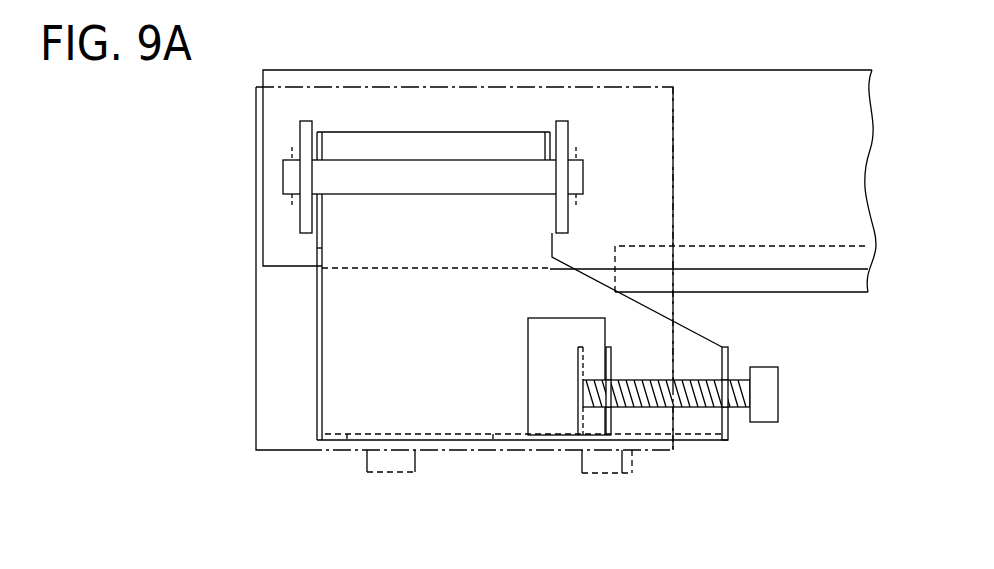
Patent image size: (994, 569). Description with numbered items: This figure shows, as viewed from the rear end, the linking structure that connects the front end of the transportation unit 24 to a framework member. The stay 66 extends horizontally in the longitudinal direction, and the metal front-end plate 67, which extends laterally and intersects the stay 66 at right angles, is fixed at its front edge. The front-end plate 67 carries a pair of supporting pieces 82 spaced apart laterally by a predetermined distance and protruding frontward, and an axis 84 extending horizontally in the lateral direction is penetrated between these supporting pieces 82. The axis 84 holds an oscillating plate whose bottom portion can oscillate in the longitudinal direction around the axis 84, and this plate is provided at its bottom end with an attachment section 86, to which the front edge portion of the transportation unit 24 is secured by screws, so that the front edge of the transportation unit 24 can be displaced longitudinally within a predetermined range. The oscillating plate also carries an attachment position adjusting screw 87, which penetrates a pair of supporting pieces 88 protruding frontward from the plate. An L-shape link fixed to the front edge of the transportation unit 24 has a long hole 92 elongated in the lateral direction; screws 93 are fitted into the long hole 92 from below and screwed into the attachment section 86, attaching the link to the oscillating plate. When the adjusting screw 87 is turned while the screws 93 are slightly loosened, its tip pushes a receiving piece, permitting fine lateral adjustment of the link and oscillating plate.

The transportation unit 24 is at (292, 452).
The stay 66 is at (830, 280).
The front-end plate 67 is at (787, 95).
The supporting pieces 82 is at (300, 133).
The axis 84 is at (437, 173).
The attachment section 86 is at (492, 453).
The attachment position adjusting screw 87 is at (778, 395).
The supporting pieces 88 is at (613, 422).
The long hole 92 is at (438, 440).
The screws 93 is at (387, 474).